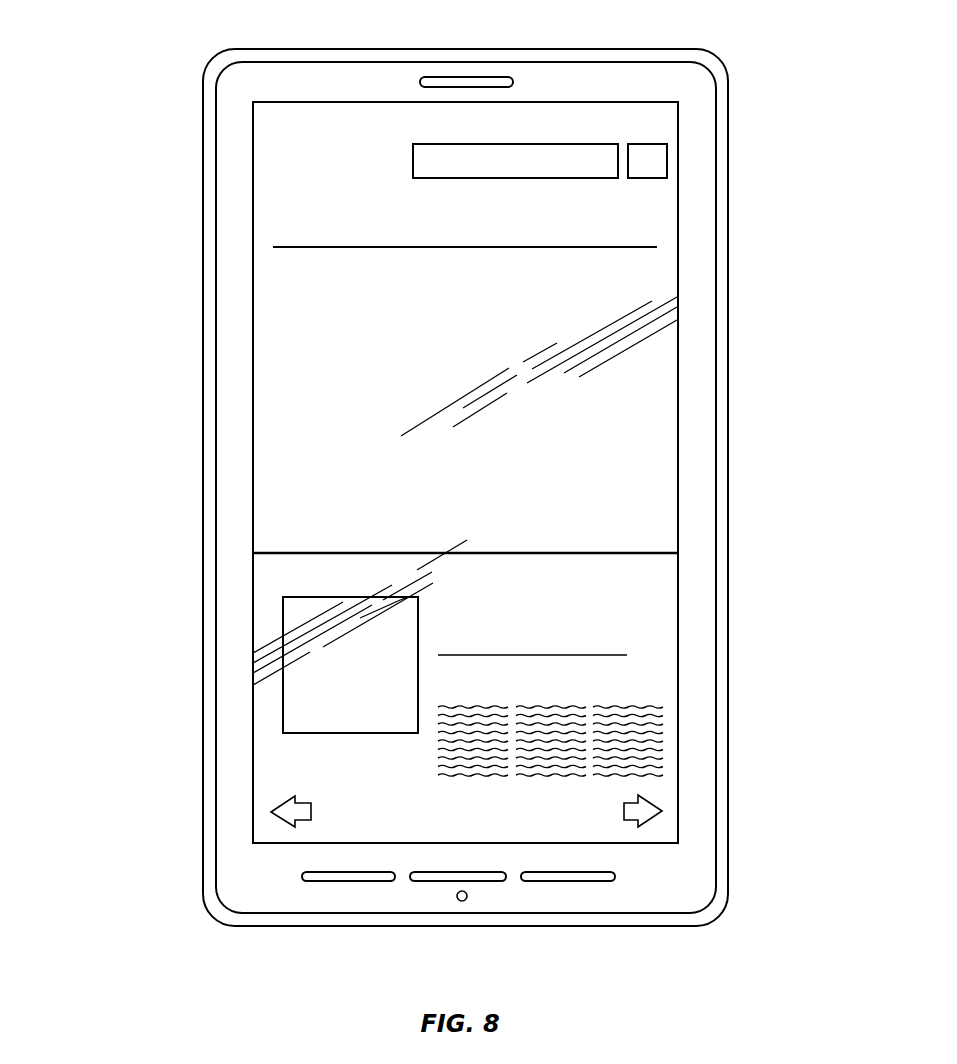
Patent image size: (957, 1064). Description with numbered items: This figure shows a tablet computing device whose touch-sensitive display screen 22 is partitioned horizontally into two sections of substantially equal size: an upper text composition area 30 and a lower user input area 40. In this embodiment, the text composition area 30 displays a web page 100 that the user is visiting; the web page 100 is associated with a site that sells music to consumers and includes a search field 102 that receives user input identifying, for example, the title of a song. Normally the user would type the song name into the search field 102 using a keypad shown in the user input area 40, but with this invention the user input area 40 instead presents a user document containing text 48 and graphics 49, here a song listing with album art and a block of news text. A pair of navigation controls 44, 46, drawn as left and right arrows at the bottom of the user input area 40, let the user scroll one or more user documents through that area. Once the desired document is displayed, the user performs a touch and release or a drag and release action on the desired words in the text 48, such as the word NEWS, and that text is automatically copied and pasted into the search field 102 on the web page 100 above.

The touch-sensitive display screen 22 is at (345, 103).
The web page 100 is at (295, 157).
The search field 102 is at (545, 143).
The text composition area 30 is at (245, 223).
The user input area 40 is at (242, 631).
The graphics 49 is at (313, 648).
The text 48 is at (427, 767).
The navigation control 44 is at (290, 812).
The navigation control 46 is at (648, 815).